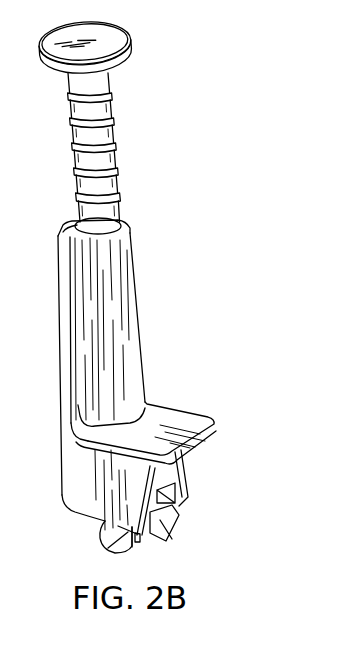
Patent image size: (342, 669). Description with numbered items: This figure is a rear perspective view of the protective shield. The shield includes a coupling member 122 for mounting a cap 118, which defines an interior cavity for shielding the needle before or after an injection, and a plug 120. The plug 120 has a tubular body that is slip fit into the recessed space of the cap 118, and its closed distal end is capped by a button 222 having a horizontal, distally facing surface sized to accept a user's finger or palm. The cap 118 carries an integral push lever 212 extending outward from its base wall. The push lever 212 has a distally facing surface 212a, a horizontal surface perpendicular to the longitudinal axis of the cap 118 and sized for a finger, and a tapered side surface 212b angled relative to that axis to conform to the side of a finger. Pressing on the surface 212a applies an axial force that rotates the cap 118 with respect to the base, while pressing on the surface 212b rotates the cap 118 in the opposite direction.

The button 222 is at (132, 48).
The plug 120 is at (129, 133).
The cap 118 is at (143, 290).
The push lever 212 is at (182, 446).
The distally facing surface 212a is at (163, 412).
The tapered side surface 212b is at (187, 455).
The coupling member 122 is at (98, 535).